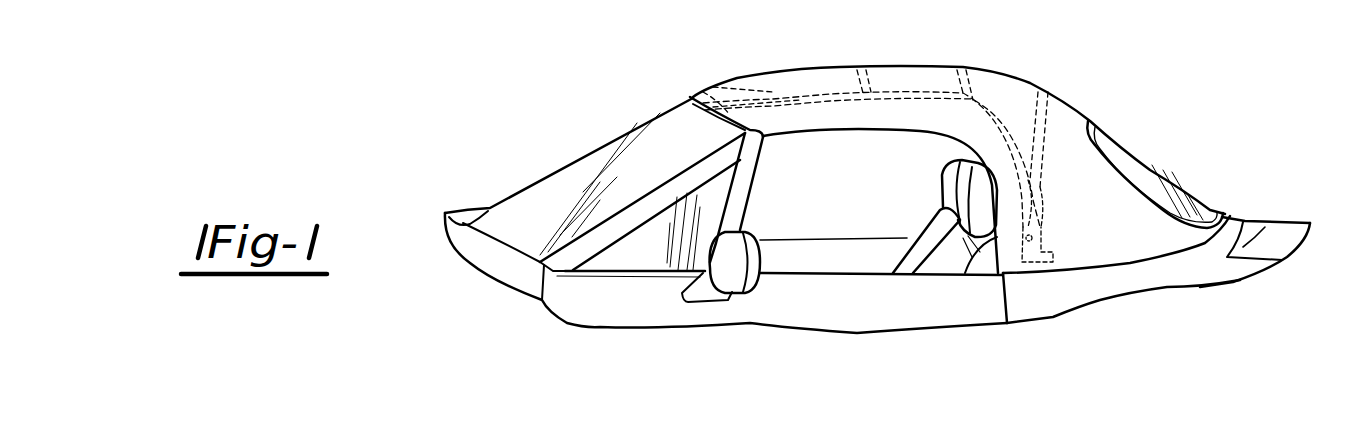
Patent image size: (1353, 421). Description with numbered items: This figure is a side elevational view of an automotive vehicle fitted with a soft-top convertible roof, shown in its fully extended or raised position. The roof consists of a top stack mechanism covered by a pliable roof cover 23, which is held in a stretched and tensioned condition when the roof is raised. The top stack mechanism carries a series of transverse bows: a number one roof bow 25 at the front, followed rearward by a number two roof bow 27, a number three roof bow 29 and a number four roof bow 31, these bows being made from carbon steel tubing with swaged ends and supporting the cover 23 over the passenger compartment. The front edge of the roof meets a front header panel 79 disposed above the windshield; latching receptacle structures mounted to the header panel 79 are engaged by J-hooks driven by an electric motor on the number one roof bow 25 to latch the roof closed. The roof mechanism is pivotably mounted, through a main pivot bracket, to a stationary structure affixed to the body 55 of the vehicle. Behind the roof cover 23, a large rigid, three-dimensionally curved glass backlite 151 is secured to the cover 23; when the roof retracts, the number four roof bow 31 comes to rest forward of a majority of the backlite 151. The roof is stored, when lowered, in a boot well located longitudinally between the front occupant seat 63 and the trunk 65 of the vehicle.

The pliable roof cover 23 is at (1007, 97).
The number one roof bow 25 is at (737, 82).
The number two roof bow 27 is at (840, 67).
The number three roof bow 29 is at (957, 67).
The number four roof bow 31 is at (1050, 87).
The body 55 is at (1055, 300).
The front occupant seat 63 is at (923, 237).
The trunk 65 is at (1277, 228).
The front header panel 79 is at (689, 98).
The backlite 151 is at (1128, 163).